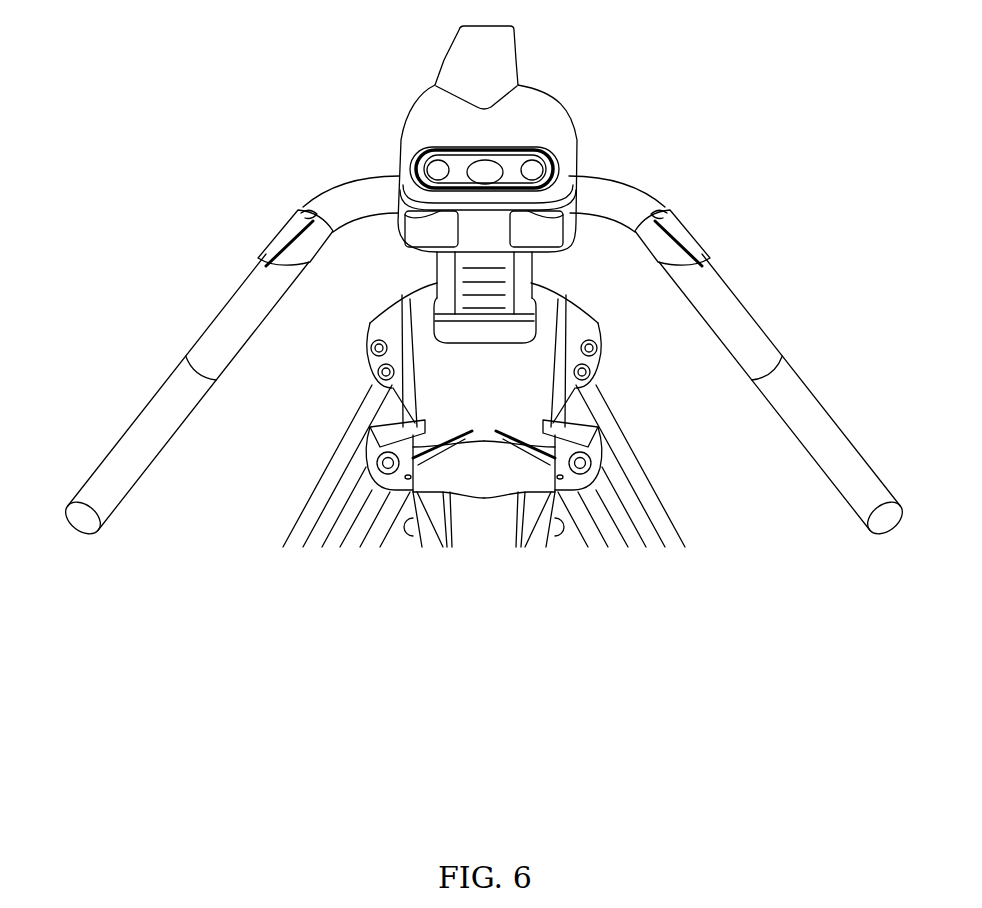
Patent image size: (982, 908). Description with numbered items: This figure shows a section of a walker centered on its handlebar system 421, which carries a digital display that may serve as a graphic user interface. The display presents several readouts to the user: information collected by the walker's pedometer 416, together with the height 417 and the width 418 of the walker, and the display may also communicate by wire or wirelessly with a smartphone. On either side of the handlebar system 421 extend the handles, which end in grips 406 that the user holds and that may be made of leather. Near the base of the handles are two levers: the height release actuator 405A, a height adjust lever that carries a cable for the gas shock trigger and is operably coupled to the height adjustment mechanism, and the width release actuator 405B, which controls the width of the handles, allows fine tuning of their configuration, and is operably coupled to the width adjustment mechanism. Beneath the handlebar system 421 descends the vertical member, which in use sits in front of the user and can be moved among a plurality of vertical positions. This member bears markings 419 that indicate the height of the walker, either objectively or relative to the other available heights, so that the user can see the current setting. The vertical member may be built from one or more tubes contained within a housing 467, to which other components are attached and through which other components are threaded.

The handlebar system 421 is at (493, 130).
The pedometer information display 416 is at (496, 158).
The height display 417 is at (420, 164).
The width display 418 is at (550, 160).
The height release actuator 405A is at (280, 237).
The width release actuator 405B is at (693, 233).
The grips 406 is at (140, 408).
The markings 419 is at (500, 290).
The housing 467 is at (600, 372).